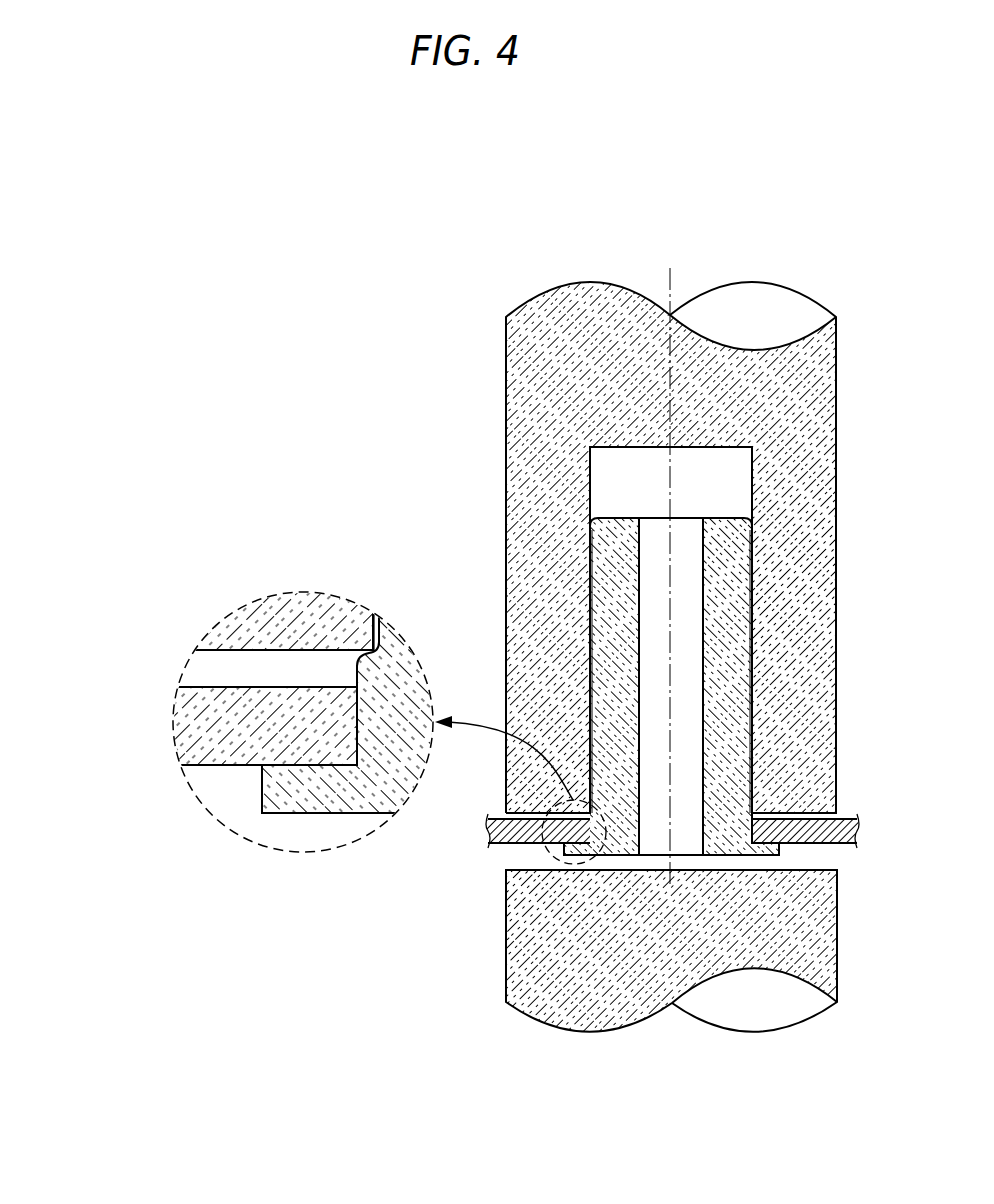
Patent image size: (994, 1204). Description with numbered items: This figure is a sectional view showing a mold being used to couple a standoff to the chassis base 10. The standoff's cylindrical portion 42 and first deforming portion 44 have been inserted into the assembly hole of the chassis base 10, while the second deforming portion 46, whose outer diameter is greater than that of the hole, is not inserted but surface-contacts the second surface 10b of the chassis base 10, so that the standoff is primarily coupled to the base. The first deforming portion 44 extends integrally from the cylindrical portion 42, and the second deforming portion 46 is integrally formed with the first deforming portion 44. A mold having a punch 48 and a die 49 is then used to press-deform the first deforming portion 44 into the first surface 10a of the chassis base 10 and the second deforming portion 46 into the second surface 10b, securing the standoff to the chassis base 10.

The chassis base 10 is at (457, 750).
The first surface 10a is at (222, 687).
The second surface 10b is at (229, 762).
The cylindrical portion 42 is at (382, 634).
The first deforming portion 44 is at (368, 676).
The second deforming portion 46 is at (315, 795).
The punch 48 is at (815, 913).
The die 49 is at (815, 486).